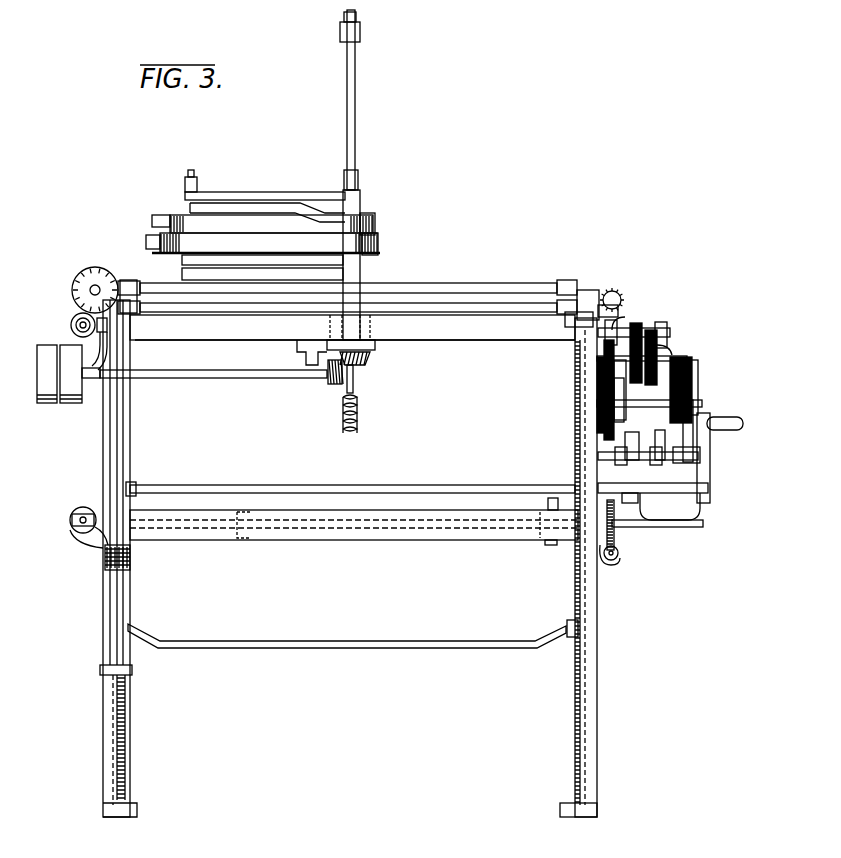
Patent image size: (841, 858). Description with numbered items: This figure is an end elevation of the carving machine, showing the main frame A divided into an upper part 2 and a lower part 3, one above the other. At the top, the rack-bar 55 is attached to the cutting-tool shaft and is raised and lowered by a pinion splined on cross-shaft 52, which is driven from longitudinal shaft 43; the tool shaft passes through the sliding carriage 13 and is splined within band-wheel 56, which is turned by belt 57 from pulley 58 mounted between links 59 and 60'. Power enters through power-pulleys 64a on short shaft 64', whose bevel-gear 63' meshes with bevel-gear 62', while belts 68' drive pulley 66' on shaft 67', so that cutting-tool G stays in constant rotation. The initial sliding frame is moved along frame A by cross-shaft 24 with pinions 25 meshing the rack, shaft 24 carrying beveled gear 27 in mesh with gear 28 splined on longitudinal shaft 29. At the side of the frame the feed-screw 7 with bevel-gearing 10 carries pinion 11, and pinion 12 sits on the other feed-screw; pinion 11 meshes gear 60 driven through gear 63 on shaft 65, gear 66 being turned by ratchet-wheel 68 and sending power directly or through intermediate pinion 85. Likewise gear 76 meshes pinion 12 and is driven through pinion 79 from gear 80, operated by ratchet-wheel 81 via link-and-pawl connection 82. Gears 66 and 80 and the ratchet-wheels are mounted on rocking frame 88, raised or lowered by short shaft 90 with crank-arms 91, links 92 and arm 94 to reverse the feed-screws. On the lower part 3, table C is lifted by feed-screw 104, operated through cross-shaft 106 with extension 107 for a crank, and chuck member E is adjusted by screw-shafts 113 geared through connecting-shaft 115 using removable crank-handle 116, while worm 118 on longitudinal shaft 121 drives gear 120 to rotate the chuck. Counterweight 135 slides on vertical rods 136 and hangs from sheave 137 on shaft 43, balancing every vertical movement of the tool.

The upper part of main frame 2 is at (352, 327).
The lower part of main frame 3 is at (238, 541).
The feed-screw 7 is at (648, 326).
The bevel-gearing 10 is at (70, 325).
The pinion 11 is at (665, 334).
The pinion 12 is at (612, 332).
The sliding table or carriage 13 is at (378, 286).
The cross-shaft 24 is at (455, 313).
The pinion 25 is at (140, 312).
The beveled gear 27 is at (605, 300).
The gear 28 is at (620, 297).
The longitudinal shaft 29 is at (626, 318).
The longitudinal shaft 43 is at (72, 290).
The cross-shaft 52 is at (452, 284).
The rack-bar 55 is at (357, 121).
The band-wheel 56 is at (378, 244).
The belt 57 is at (266, 256).
The pulley 58 is at (160, 238).
The link 59 is at (183, 207).
The gear 60 is at (673, 352).
The link 60' is at (247, 188).
The gear 63 is at (686, 357).
The bevel-gear 63' is at (338, 383).
The bevel-gear 62' is at (352, 359).
The short shaft 64' is at (213, 385).
The power-pulleys 64a is at (68, 385).
The shaft 65 is at (376, 220).
The gear 66 is at (665, 394).
The pulley 66' is at (151, 218).
The shaft 67' is at (199, 164).
The ratchet-wheel 68 is at (647, 445).
The belts 68' is at (271, 225).
The gear 76 is at (597, 360).
The pinion 79 is at (597, 372).
The gear 80 is at (597, 397).
The ratchet-wheel 81 is at (597, 425).
The link-and-pawl connection 82 is at (597, 410).
The intermediate pinion 85 is at (694, 378).
The rocking frame 88 is at (710, 418).
The short shaft 90 is at (700, 465).
The crank-arms 91 is at (663, 465).
The links 92 is at (694, 450).
The arm 94 is at (648, 465).
The feed-screw 104 is at (127, 692).
The cross-shaft 106 is at (282, 488).
The extension 107 is at (632, 503).
The screw-shafts 113 is at (658, 534).
The connecting-shaft 115 is at (70, 522).
The crank-handle 116 is at (710, 487).
The worm 118 is at (621, 568).
The gear 120 is at (615, 535).
The longitudinal shaft 121 is at (619, 556).
The counterweight 135 is at (104, 560).
The vertical rods 136 is at (133, 548).
The sheave 137 is at (98, 268).
The main frame A is at (598, 655).
The table C is at (353, 632).
The chuck member E is at (550, 546).
The cutting-tool G is at (360, 415).